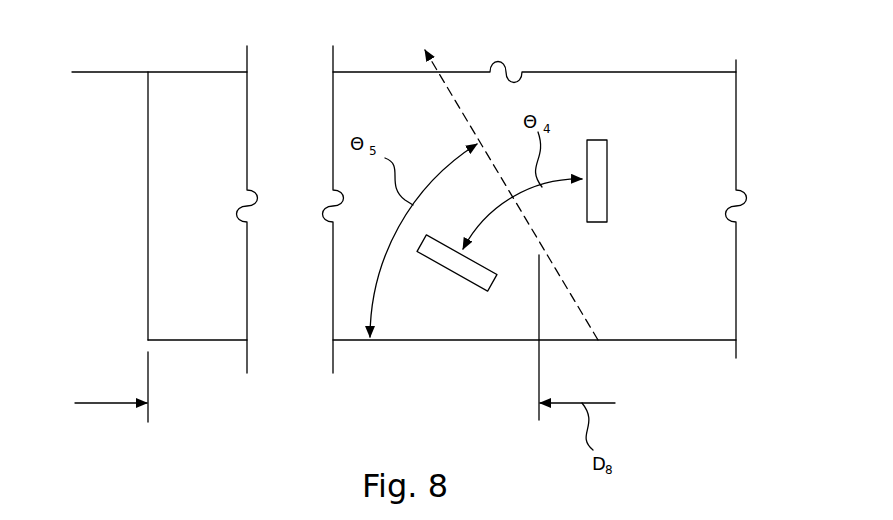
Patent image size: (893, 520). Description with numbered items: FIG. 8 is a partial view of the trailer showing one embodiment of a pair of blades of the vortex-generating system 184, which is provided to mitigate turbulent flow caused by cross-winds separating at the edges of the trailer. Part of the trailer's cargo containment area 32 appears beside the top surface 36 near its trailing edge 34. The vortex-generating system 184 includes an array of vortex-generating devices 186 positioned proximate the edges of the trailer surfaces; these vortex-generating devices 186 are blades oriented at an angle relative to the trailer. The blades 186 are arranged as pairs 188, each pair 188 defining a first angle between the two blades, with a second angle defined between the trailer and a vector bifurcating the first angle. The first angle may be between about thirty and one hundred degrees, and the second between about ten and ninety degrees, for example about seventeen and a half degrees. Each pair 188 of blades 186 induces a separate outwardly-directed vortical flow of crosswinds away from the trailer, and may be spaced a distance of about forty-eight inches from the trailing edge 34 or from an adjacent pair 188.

The cargo containment area 32 is at (193, 340).
The trailing edge 34 is at (148, 243).
The top surface 36 is at (717, 142).
The vortex-generating system 184 is at (619, 171).
The vortex-generating devices 186 is at (590, 140).
The pairs of blades 188 is at (576, 251).